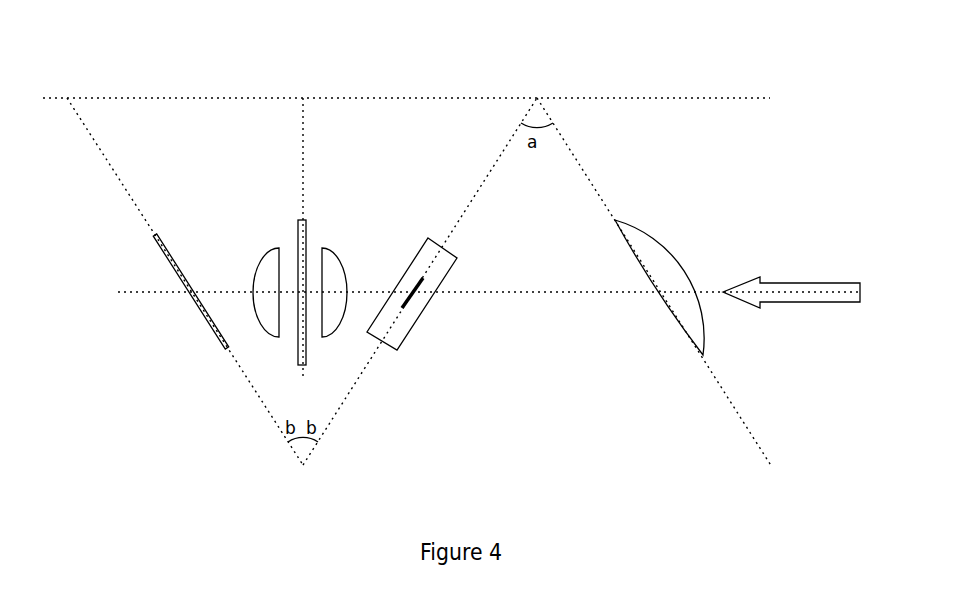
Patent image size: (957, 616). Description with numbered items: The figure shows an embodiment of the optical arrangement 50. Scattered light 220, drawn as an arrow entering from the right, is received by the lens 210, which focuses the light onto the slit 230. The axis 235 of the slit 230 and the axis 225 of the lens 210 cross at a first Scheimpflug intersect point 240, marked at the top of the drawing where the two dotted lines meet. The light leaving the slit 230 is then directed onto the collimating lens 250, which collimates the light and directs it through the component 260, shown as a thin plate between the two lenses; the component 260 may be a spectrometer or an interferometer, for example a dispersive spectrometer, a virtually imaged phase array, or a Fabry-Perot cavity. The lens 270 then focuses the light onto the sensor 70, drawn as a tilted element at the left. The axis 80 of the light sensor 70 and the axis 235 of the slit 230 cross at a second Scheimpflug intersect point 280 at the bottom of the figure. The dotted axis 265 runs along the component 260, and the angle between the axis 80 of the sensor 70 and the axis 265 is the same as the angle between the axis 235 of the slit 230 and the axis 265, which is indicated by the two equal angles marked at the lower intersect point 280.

The optical arrangement 50 is at (320, 55).
The sensor 70 is at (210, 330).
The axis of light sensor 80 is at (255, 388).
The lens 210 is at (670, 250).
The scattered light 220 is at (802, 281).
The axis of lens 225 is at (590, 178).
The slit 230 is at (405, 305).
The axis of slit 235 is at (352, 388).
The first Scheimpflug intersect point 240 is at (537, 98).
The collimating lens 250 is at (343, 260).
The component 260 is at (305, 218).
The axis along component 265 is at (302, 183).
The lens 270 is at (260, 257).
The second Scheimpflug intersect point 280 is at (305, 467).